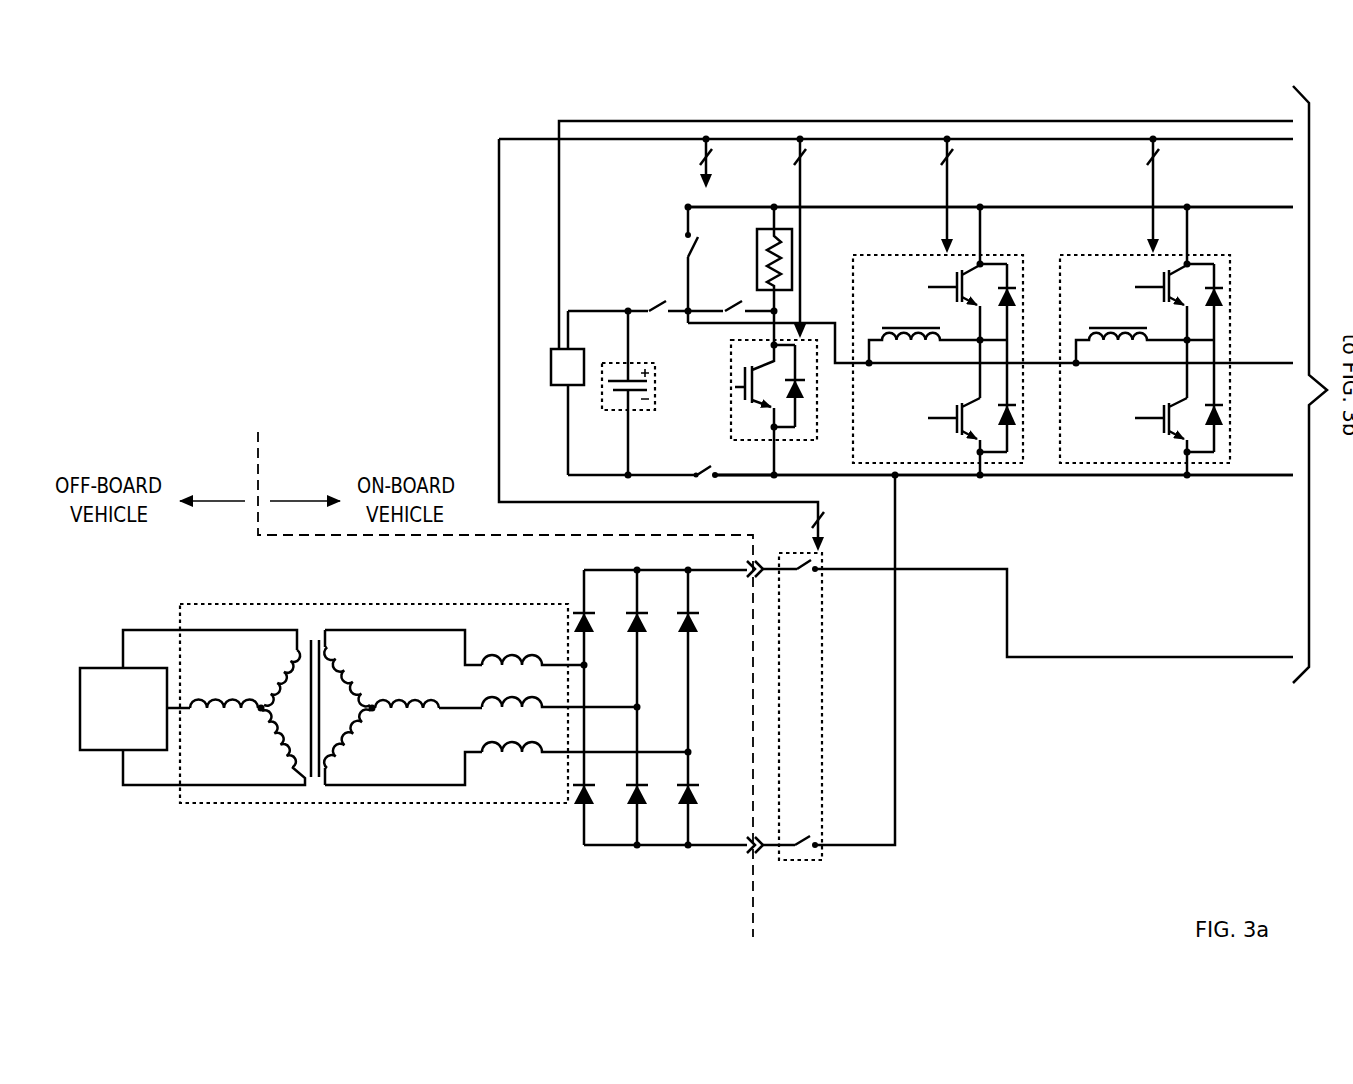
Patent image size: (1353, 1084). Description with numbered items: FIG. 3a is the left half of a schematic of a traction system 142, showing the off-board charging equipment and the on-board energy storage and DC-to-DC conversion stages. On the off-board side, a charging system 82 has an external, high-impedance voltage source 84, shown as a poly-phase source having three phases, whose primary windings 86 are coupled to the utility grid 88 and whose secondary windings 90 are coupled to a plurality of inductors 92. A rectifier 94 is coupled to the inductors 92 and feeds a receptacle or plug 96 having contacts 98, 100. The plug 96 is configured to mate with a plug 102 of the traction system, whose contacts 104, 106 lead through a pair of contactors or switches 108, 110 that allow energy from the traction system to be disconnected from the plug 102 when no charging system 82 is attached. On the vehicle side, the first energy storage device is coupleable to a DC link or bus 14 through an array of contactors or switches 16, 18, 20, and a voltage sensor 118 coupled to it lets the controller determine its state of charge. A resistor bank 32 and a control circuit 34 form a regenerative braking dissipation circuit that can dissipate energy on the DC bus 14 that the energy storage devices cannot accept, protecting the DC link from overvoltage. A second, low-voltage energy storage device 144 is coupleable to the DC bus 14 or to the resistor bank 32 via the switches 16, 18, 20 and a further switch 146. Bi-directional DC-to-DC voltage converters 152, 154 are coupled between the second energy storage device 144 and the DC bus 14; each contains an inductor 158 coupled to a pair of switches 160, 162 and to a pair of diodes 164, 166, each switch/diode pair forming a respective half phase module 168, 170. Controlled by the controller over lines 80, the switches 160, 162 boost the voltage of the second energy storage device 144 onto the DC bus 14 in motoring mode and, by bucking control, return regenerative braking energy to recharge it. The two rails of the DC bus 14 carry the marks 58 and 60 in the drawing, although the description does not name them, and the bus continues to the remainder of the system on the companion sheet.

The DC link or bus 14 is at (1068, 207).
The contactor or switch 16 is at (684, 250).
The contactor or switch 18 is at (730, 306).
The contactor or switch 20 is at (698, 468).
The resistor bank 32 is at (757, 254).
The control circuit 34 is at (790, 441).
The DC link positive rail 58 is at (1031, 207).
The DC link negative rail 60 is at (1019, 478).
The lines 80 is at (500, 492).
The charging system 82 is at (270, 816).
The external high-impedance voltage source 84 is at (259, 603).
The primary windings 86 is at (245, 666).
The utility grid 88 is at (112, 751).
The secondary windings 90 is at (394, 695).
The inductors 92 is at (491, 700).
The rectifier 94 is at (657, 873).
The receptacle or plug 96 is at (744, 897).
The contact 98 is at (750, 579).
The contact 100 is at (749, 842).
The plug 102 is at (764, 904).
The contact 104 is at (758, 566).
The contact 106 is at (759, 850).
The contactor or switch 108 is at (800, 572).
The contactor or switch 110 is at (798, 842).
The voltage sensor 118 is at (562, 387).
The traction system 142 is at (900, 96).
The second energy storage device 144 is at (656, 397).
The switch 146 is at (665, 314).
The bi-directional DC-to-DC voltage converter 152 is at (920, 254).
The bi-directional DC-to-DC voltage converter 154 is at (1145, 341).
The inductor 158 is at (940, 350).
The switch 160 is at (940, 286).
The switch 162 is at (940, 416).
The diode 164 is at (1021, 287).
The diode 166 is at (1005, 403).
The half phase module 168 is at (943, 307).
The half phase module 170 is at (943, 441).